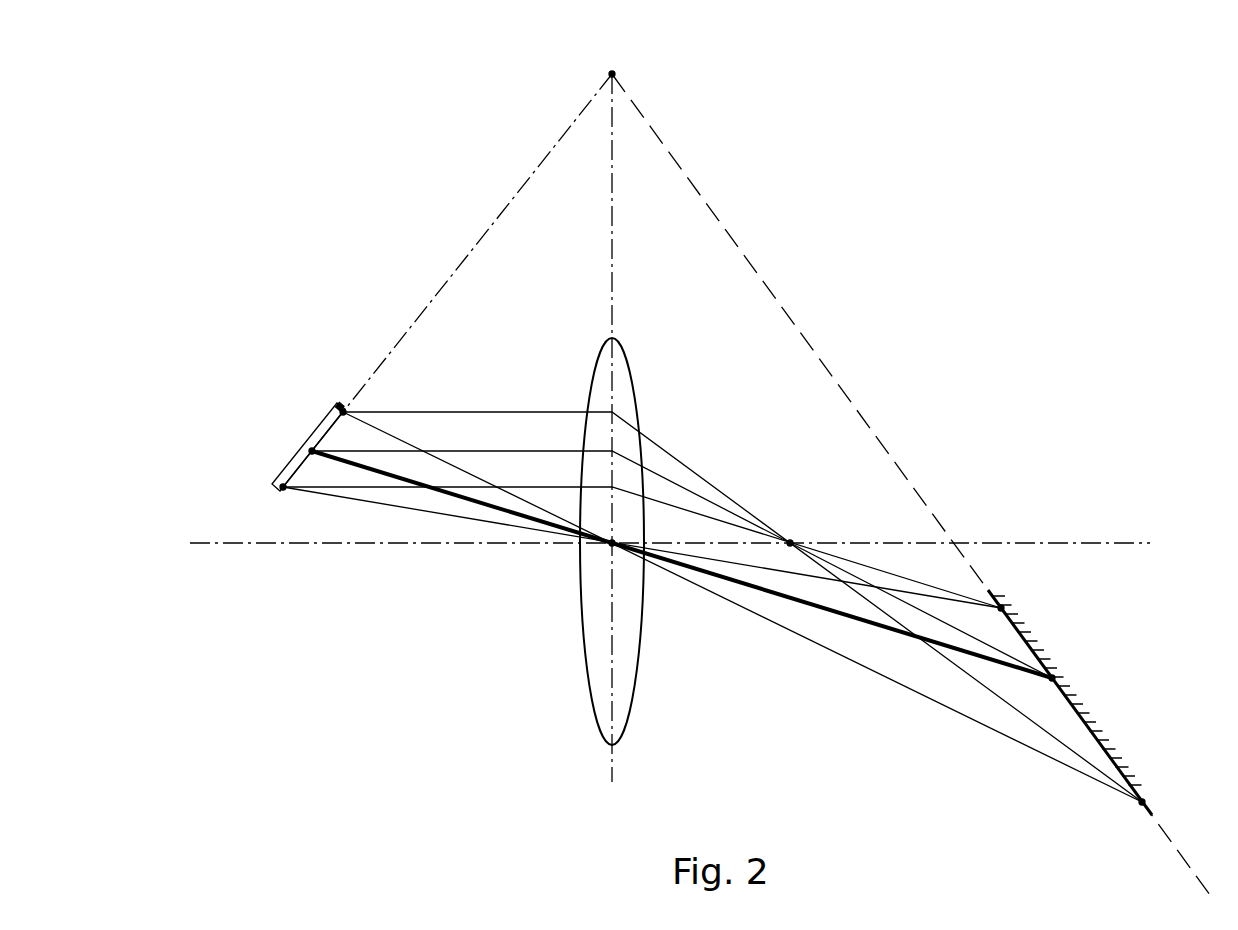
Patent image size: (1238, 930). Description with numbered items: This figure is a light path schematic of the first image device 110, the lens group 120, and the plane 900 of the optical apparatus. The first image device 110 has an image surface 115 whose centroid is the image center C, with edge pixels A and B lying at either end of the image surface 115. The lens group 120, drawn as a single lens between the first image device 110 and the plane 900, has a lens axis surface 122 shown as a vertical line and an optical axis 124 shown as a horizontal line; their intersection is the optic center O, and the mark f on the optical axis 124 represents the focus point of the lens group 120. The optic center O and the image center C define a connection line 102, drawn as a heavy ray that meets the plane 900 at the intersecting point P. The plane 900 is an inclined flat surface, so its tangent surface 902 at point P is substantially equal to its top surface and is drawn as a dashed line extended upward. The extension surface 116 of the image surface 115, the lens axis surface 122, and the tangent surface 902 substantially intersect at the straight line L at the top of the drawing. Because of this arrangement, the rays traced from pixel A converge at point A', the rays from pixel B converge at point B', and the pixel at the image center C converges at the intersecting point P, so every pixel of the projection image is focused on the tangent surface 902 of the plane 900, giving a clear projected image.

The connection line 102 is at (837, 618).
The first image device 110 is at (318, 428).
The image surface 115 is at (334, 427).
The extension surface 116 is at (466, 254).
The lens group 120 is at (628, 675).
The lens axis surface 122 is at (620, 249).
The optical axis 124 is at (246, 548).
The plane 900 is at (1132, 777).
The tangent surface 902 is at (745, 254).
The straight line L is at (618, 75).
The optic center O is at (609, 547).
The focus point f is at (790, 525).
The pixel A is at (719, 580).
The pixel B is at (612, 546).
The image center C is at (308, 452).
The point A' is at (1183, 804).
The point B' is at (1042, 610).
The intersecting point P is at (1057, 677).